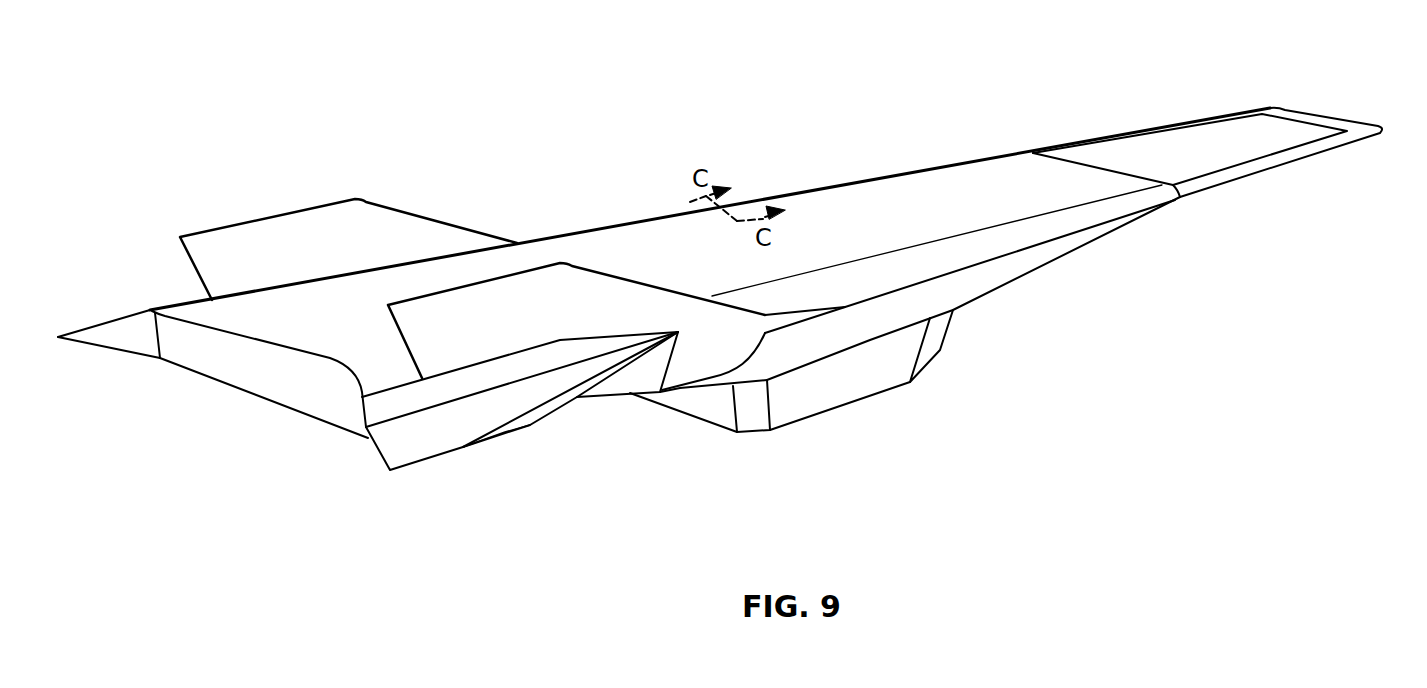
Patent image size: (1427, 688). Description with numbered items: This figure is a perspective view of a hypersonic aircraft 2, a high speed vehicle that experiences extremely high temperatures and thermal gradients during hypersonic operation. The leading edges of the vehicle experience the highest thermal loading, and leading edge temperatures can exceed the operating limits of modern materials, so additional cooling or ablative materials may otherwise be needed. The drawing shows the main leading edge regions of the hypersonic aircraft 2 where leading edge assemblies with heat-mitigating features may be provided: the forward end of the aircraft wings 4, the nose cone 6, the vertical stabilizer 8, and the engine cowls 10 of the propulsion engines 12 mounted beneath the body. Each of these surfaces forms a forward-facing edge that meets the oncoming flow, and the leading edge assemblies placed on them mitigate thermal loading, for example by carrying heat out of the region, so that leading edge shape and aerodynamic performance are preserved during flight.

The hypersonic aircraft 2 is at (1071, 101).
The aircraft wings 4 is at (1138, 208).
The nose cone 6 is at (1377, 123).
The vertical stabilizer 8 is at (412, 214).
The engine cowls 10 is at (950, 314).
The propulsion engines 12 is at (830, 397).